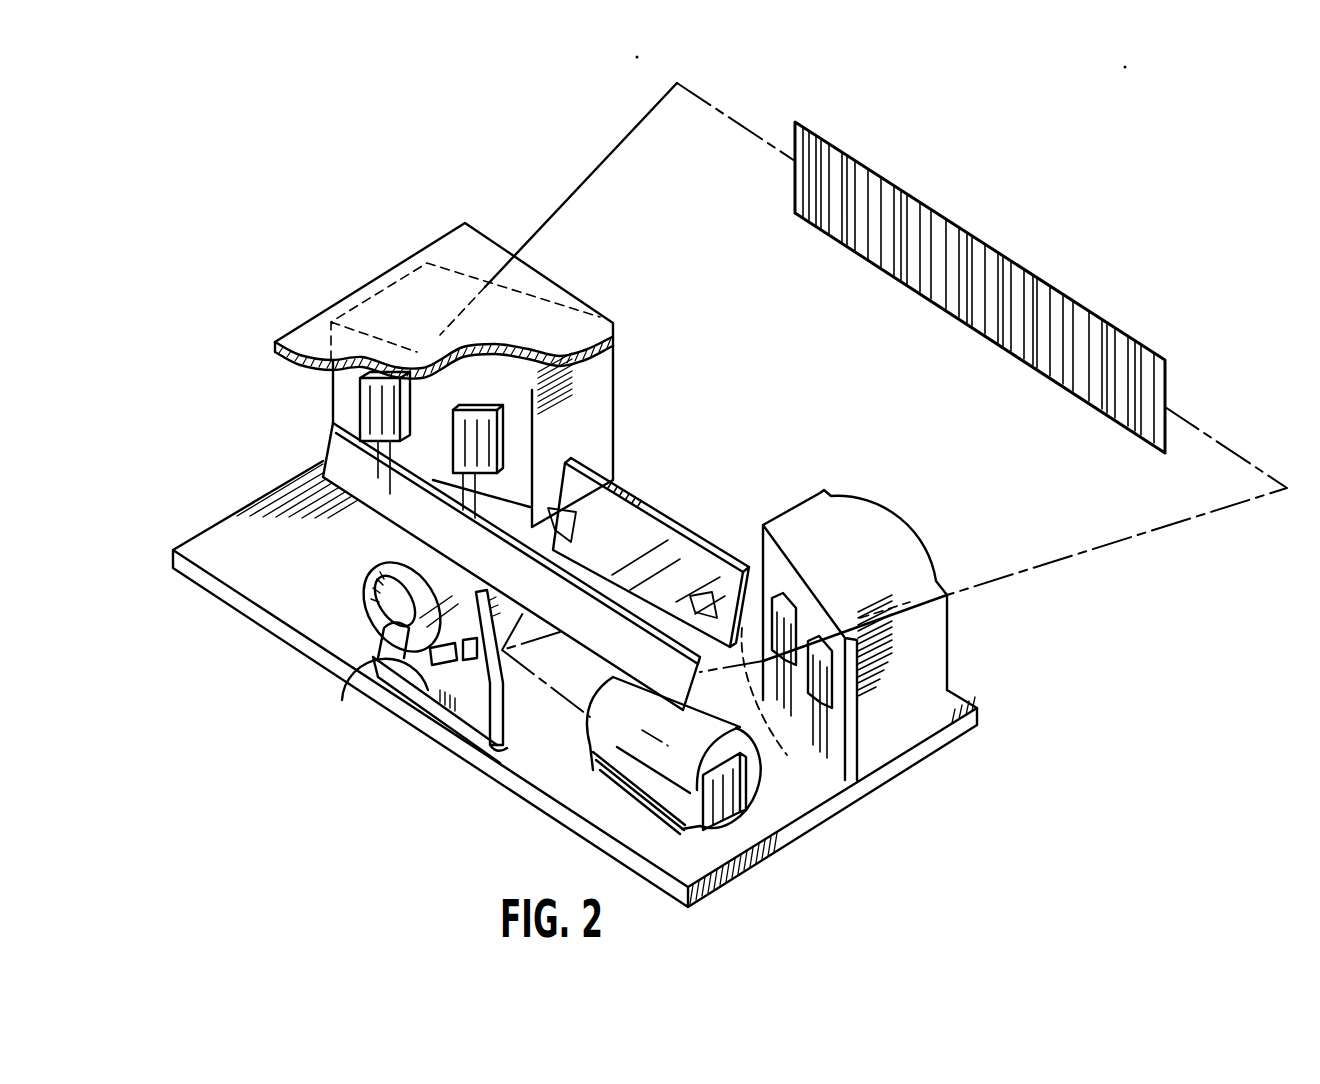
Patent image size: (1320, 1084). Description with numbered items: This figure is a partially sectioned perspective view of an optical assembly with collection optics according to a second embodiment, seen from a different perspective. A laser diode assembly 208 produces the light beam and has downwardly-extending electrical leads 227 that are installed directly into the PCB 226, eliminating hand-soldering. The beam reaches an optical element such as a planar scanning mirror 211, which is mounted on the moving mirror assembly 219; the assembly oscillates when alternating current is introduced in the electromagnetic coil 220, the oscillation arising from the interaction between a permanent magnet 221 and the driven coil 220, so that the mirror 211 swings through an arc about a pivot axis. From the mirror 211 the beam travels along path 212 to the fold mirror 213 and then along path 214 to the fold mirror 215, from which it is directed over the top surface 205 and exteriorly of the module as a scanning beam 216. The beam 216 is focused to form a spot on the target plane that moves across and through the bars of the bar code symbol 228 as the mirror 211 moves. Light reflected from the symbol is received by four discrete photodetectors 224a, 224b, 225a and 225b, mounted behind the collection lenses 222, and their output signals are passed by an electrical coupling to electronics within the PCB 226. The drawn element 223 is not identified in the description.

The top surface 205 is at (458, 250).
The photodetector 225a is at (447, 400).
The photodetector 225b is at (360, 396).
The circuit board connector 223 is at (500, 362).
The path 214 is at (540, 470).
The fold mirror 215 is at (333, 457).
The scanning beam 216 is at (617, 147).
The fold mirror 213 is at (658, 498).
The bar code symbol 228 is at (1025, 345).
The collection lenses 222 is at (880, 525).
The photodetector 224a is at (836, 697).
The photodetector 224b is at (790, 605).
The path 212 is at (777, 706).
The electromagnetic coil 220 is at (373, 575).
The permanent magnet 221 is at (342, 700).
The moving mirror assembly 219 is at (473, 707).
The scanning mirror 211 is at (492, 777).
The laser diode assembly 208 is at (603, 782).
The electrical leads 227 is at (746, 789).
The PCB 226 is at (747, 873).